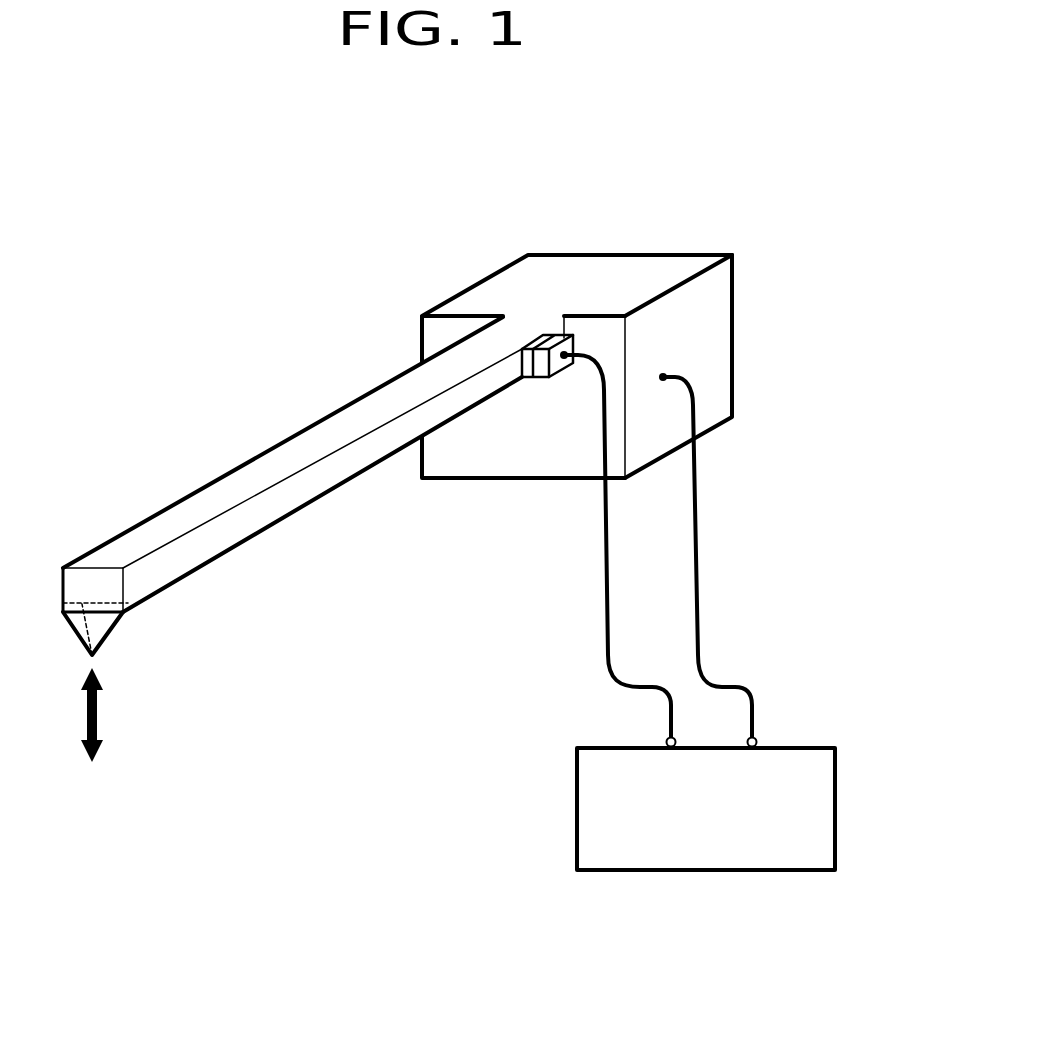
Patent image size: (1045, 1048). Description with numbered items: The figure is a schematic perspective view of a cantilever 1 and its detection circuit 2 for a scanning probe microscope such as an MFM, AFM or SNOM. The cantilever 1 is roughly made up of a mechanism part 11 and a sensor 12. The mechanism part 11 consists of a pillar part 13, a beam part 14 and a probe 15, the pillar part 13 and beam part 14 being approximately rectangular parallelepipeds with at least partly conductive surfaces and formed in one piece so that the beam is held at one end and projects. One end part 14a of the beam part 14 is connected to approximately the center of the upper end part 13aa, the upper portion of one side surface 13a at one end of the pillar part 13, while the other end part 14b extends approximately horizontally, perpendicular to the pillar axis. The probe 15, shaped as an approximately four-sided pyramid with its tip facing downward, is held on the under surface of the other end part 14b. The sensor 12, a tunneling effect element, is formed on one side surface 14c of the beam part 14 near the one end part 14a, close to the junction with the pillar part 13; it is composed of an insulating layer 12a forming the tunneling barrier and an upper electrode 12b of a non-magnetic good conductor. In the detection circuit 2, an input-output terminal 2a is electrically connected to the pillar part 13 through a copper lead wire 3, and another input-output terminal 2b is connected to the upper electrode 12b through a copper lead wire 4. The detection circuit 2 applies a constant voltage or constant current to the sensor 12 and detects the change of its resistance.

The cantilever 1 is at (279, 414).
The mechanism part 11 is at (365, 519).
The sensor 12 is at (543, 397).
The insulating layer 12a is at (543, 337).
The upper electrode 12b is at (575, 348).
The pillar part 13 is at (633, 270).
The side surface 13a is at (607, 327).
The upper end part 13aa is at (580, 320).
The beam part 14 is at (230, 528).
The one end part 14a is at (520, 325).
The another end part 14b is at (133, 580).
The side surface 14c is at (367, 447).
The probe 15 is at (102, 625).
The detection circuit 2 is at (835, 805).
The input-output terminal 2a is at (757, 738).
The input-output terminal 2b is at (666, 742).
The lead wire 3 is at (695, 548).
The lead wire 4 is at (608, 640).